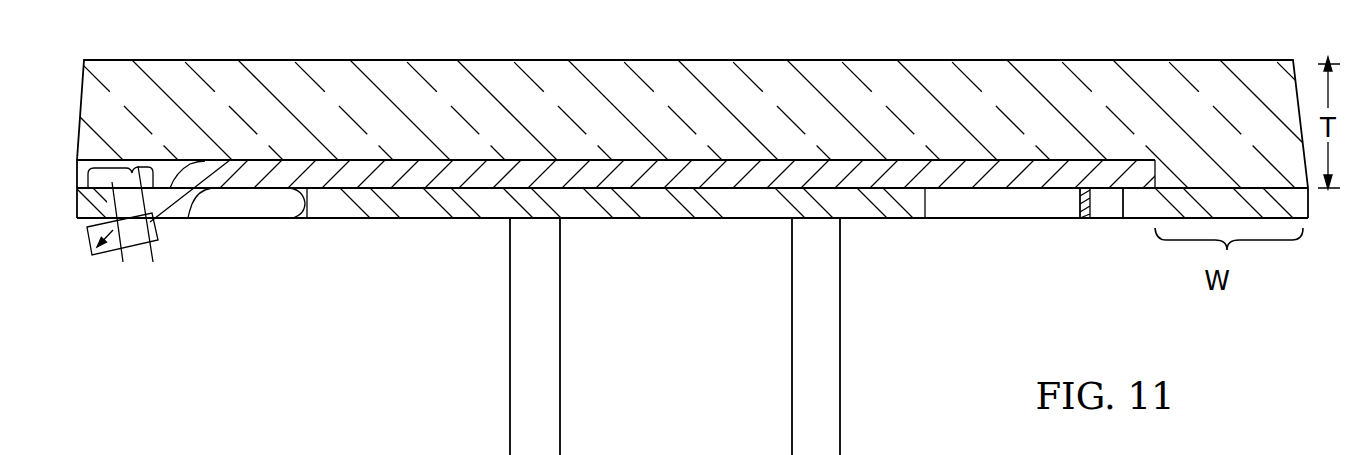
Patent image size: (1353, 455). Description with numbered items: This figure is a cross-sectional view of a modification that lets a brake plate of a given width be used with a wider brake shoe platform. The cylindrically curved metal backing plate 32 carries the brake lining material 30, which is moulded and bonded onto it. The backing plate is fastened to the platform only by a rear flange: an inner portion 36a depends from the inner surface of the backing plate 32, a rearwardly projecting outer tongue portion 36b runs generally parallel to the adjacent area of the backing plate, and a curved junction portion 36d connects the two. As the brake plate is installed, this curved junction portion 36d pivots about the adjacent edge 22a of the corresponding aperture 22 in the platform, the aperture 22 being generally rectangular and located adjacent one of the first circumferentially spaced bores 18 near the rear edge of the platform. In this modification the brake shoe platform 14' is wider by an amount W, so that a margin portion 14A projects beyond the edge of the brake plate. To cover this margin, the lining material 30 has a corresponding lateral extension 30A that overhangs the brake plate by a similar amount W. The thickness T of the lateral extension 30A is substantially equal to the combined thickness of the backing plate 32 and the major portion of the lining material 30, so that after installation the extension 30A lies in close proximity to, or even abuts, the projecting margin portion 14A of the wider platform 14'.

The brake lining material 30 is at (497, 78).
The lateral extension of the lining material 30A is at (1226, 82).
The backing plate 32 is at (287, 180).
The aperture 22 is at (303, 222).
The brake shoe platform 14' is at (501, 253).
The margin portion 14A is at (1180, 207).
The first circumferentially spaced bore 18 is at (1104, 205).
The inner portion of the rear flange 36a is at (188, 195).
The outer tongue portion 36b is at (92, 257).
The curved junction portion 36d is at (173, 228).
The edge of the aperture 22a is at (175, 207).